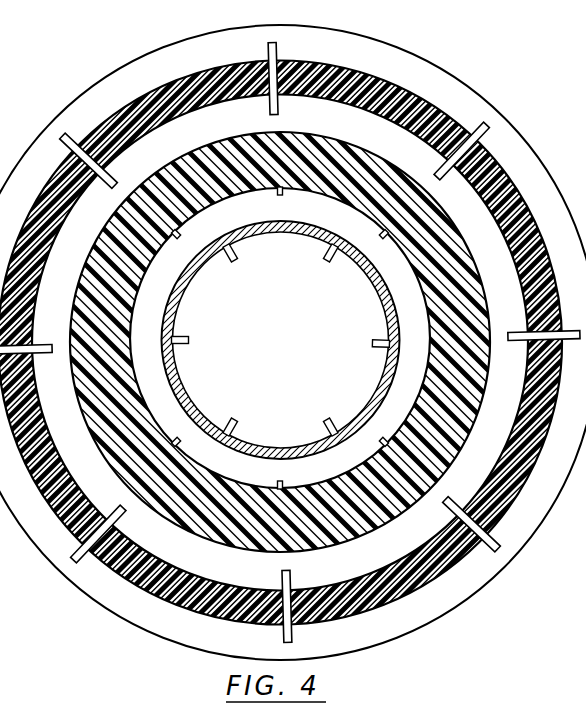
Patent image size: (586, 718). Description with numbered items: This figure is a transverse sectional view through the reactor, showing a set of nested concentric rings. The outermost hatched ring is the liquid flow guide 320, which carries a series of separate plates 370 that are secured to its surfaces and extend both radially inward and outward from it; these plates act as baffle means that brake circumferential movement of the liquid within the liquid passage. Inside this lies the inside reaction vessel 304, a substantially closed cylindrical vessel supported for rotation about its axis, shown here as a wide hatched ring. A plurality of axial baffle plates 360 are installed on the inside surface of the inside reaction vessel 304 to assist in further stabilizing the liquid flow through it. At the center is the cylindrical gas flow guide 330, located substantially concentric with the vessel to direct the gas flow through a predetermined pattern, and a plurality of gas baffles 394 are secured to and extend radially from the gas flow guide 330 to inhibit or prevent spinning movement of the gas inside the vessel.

The liquid flow guide 320 is at (228, 68).
The separate plates 370 is at (110, 170).
The inside reaction vessel 304 is at (352, 527).
The axial baffle plates 360 is at (280, 195).
The gas flow guide 330 is at (372, 281).
The gas baffles 394 is at (189, 341).